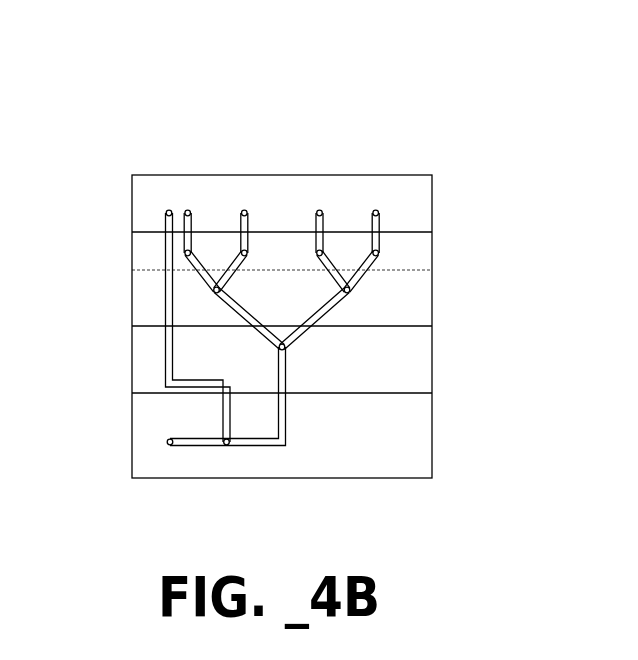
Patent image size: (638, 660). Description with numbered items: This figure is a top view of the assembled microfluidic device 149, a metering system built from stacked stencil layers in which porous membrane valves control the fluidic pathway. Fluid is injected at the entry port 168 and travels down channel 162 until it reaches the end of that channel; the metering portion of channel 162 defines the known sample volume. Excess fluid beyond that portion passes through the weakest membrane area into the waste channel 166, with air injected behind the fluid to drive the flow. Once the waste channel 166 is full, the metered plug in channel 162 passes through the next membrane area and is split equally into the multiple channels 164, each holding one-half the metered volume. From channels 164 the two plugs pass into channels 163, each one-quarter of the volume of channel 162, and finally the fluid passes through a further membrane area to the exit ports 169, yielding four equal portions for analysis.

The microfluidic device 149 is at (103, 112).
The channel 162 is at (287, 417).
The channel 163 is at (363, 270).
The channel 164 is at (320, 317).
The waste channel 166 is at (167, 297).
The entry port 168 is at (170, 444).
The exit port 169 is at (376, 210).